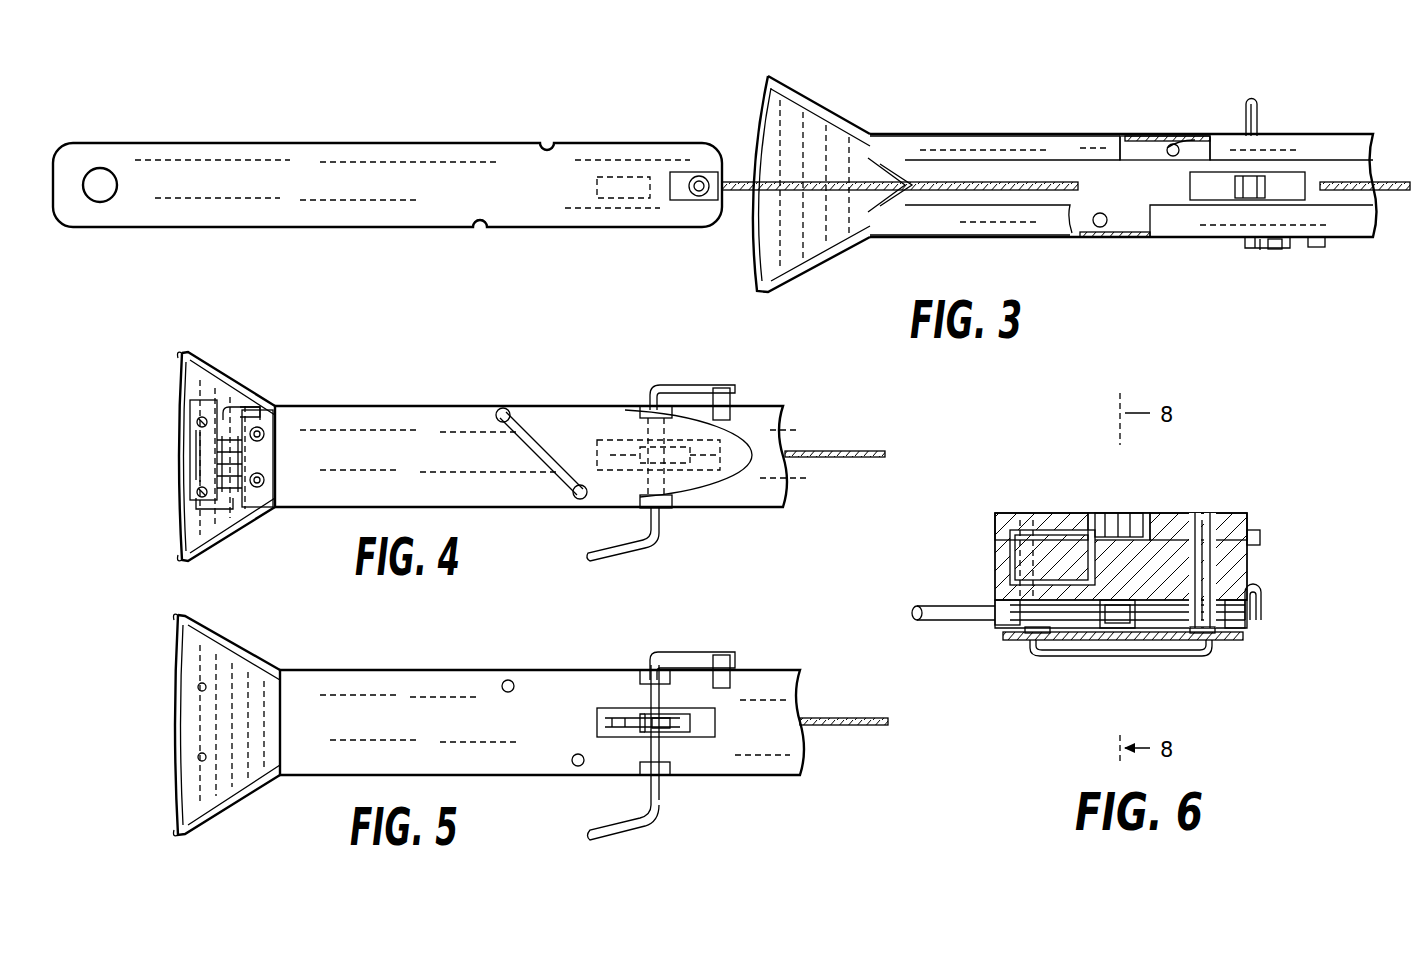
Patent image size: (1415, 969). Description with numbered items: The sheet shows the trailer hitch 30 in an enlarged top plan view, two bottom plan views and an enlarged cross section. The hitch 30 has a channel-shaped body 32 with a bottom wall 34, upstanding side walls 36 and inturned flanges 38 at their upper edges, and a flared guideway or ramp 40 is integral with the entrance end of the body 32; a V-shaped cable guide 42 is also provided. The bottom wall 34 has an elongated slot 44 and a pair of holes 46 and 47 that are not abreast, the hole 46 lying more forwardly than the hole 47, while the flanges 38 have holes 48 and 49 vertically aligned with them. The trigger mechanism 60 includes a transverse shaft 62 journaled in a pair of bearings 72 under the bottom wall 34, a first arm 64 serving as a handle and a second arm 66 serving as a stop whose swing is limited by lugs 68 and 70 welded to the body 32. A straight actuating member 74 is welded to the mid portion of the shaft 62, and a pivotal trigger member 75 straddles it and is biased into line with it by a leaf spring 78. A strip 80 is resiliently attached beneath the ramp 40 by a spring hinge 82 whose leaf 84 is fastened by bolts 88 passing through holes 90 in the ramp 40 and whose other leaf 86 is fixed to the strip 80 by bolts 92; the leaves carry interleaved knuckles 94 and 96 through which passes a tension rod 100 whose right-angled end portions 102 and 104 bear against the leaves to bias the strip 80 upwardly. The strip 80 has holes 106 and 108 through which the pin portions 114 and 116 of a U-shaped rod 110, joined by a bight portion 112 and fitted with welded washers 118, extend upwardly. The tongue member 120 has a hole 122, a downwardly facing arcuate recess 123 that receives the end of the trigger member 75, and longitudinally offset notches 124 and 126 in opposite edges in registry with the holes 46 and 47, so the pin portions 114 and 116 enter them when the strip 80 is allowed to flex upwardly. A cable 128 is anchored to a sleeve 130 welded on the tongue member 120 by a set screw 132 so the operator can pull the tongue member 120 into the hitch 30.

In FIG. 3, the trailer hitch 30 is at (672, 252).
In FIG. 4, the trailer hitch 30 is at (386, 385).
In FIG. 6, the trailer hitch 30 is at (1035, 483).
In FIG. 3, the channel-shaped body 32 is at (1016, 120).
In FIG. 4, the channel-shaped body 32 is at (760, 513).
In FIG. 5, the channel-shaped body 32 is at (432, 648).
In FIG. 6, the channel-shaped body 32 is at (1206, 487).
In FIG. 3, the bottom wall 34 is at (1133, 150).
In FIG. 4, the bottom wall 34 is at (775, 478).
In FIG. 5, the bottom wall 34 is at (370, 690).
In FIG. 6, the bottom wall 34 is at (1120, 641).
In FIG. 3, the side walls 36 is at (1155, 140).
In FIG. 6, the side walls 36 is at (997, 558).
In FIG. 3, the inturned flanges 38 is at (1002, 226).
In FIG. 6, the inturned flanges 38 is at (1055, 513).
In FIG. 3, the flared guideway or ramp 40 is at (822, 112).
In FIG. 4, the flared guideway or ramp 40 is at (210, 380).
In FIG. 5, the flared guideway or ramp 40 is at (240, 800).
In FIG. 3, the V-shaped cable guide 42 is at (888, 202).
In FIG. 3, the elongated slot 44 is at (1290, 172).
In FIG. 4, the elongated slot 44 is at (600, 440).
In FIG. 5, the elongated slot 44 is at (700, 740).
In FIG. 3, the hole 46 is at (1180, 150).
In FIG. 5, the hole 46 is at (575, 765).
In FIG. 6, the hole 46 is at (997, 592).
In FIG. 3, the hole 47 is at (1100, 213).
In FIG. 5, the hole 47 is at (508, 678).
In FIG. 6, the hole 47 is at (1255, 583).
In FIG. 6, the hole 48 is at (1012, 518).
In FIG. 6, the hole 49 is at (1222, 515).
In FIG. 3, the trigger mechanism 60 is at (1236, 249).
In FIG. 4, the trigger mechanism 60 is at (696, 375).
In FIG. 5, the trigger mechanism 60 is at (660, 818).
In FIG. 6, the trigger mechanism 60 is at (972, 632).
In FIG. 3, the transverse shaft 62 is at (1260, 134).
In FIG. 4, the transverse shaft 62 is at (672, 482).
In FIG. 5, the transverse shaft 62 is at (648, 693).
In FIG. 6, the transverse shaft 62 is at (1162, 640).
In FIG. 3, the first arm 64 is at (1251, 100).
In FIG. 4, the first arm 64 is at (620, 547).
In FIG. 5, the first arm 64 is at (600, 830).
In FIG. 6, the first arm 64 is at (940, 622).
In FIG. 3, the second arm 66 is at (1260, 252).
In FIG. 4, the second arm 66 is at (700, 388).
In FIG. 5, the second arm 66 is at (700, 652).
In FIG. 6, the second arm 66 is at (1265, 600).
In FIG. 3, the lug 68 is at (1272, 252).
In FIG. 4, the lug 68 is at (735, 405).
In FIG. 5, the lug 68 is at (735, 676).
In FIG. 3, the lug 70 is at (1318, 249).
In FIG. 4, the lug 70 is at (678, 388).
In FIG. 5, the lug 70 is at (678, 655).
In FIG. 6, the lug 70 is at (1262, 540).
In FIG. 4, the bearings 72 is at (646, 408).
In FIG. 5, the bearings 72 is at (640, 676).
In FIG. 6, the bearings 72 is at (1000, 630).
In FIG. 3, the actuating member 74 is at (1190, 186).
In FIG. 4, the actuating member 74 is at (590, 445).
In FIG. 5, the actuating member 74 is at (597, 722).
In FIG. 6, the actuating member 74 is at (1115, 600).
In FIG. 3, the trigger member 75 is at (1250, 187).
In FIG. 4, the trigger member 75 is at (735, 432).
In FIG. 5, the trigger member 75 is at (700, 722).
In FIG. 6, the trigger member 75 is at (1118, 640).
In FIG. 6, the leaf spring 78 is at (1150, 600).
In FIG. 4, the strip 80 is at (413, 428).
In FIG. 6, the strip 80 is at (1242, 640).
In FIG. 4, the spring hinge 82 is at (233, 512).
In FIG. 4, the leaf 84 is at (200, 462).
In FIG. 4, the leaf 86 is at (280, 505).
In FIG. 4, the bolts 88 is at (195, 405).
In FIG. 5, the holes 90 is at (198, 687).
In FIG. 4, the bolts 92 is at (265, 430).
In FIG. 4, the knuckles 94 is at (225, 428).
In FIG. 4, the knuckles 96 is at (240, 445).
In FIG. 4, the tension rod 100 is at (233, 410).
In FIG. 4, the end portion 102 is at (212, 515).
In FIG. 4, the end portion 104 is at (252, 412).
In FIG. 4, the hole 106 is at (578, 500).
In FIG. 6, the hole 106 is at (1050, 658).
In FIG. 4, the hole 108 is at (500, 410).
In FIG. 6, the hole 108 is at (1203, 655).
In FIG. 4, the U-shaped rod 110 is at (520, 447).
In FIG. 6, the U-shaped rod 110 is at (1036, 660).
In FIG. 4, the bight portion 112 is at (548, 472).
In FIG. 6, the bight portion 112 is at (1090, 641).
In FIG. 3, the pin portion 114 is at (1182, 144).
In FIG. 6, the pin portion 114 is at (997, 525).
In FIG. 3, the pin portion 116 is at (1100, 228).
In FIG. 6, the pin portion 116 is at (1242, 533).
In FIG. 6, the washers 118 is at (1040, 641).
In FIG. 3, the tongue member 120 is at (282, 232).
In FIG. 6, the tongue member 120 is at (1080, 535).
In FIG. 3, the hole 122 is at (100, 195).
In FIG. 3, the arcuate recess 123 is at (628, 205).
In FIG. 3, the notch 124 is at (547, 148).
In FIG. 3, the notch 126 is at (484, 222).
In FIG. 6, the notch 126 is at (1250, 555).
In FIG. 3, the cable 128 is at (735, 181).
In FIG. 4, the cable 128 is at (845, 450).
In FIG. 5, the cable 128 is at (832, 725).
In FIG. 3, the sleeve 130 is at (690, 172).
In FIG. 6, the sleeve 130 is at (1120, 513).
In FIG. 3, the set screw 132 is at (700, 195).